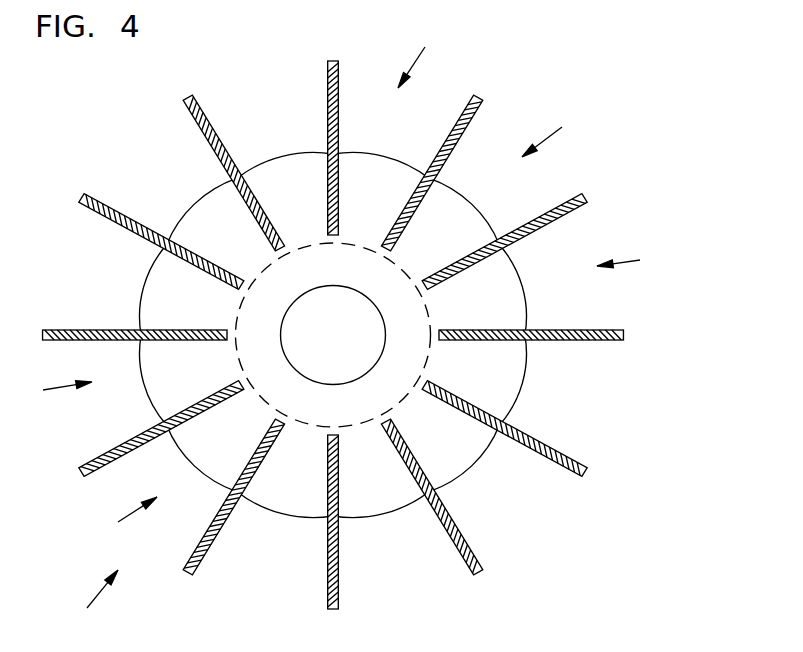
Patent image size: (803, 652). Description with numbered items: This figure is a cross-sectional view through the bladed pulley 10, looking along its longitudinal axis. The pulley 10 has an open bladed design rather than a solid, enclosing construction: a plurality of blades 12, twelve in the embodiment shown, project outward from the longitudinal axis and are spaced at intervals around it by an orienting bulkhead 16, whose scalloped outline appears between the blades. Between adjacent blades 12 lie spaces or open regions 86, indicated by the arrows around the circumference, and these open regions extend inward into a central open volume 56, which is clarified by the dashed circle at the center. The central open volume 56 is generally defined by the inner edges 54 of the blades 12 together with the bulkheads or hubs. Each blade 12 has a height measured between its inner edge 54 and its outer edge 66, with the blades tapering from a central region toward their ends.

The bladed pulley 10 is at (90, 602).
The blades 12 is at (479, 96).
The orienting bulkheads 16 is at (192, 208).
The inner edge 54 is at (423, 284).
The central open volume 56 is at (291, 296).
The outer edge 66 is at (333, 238).
The open regions 86 is at (343, 283).